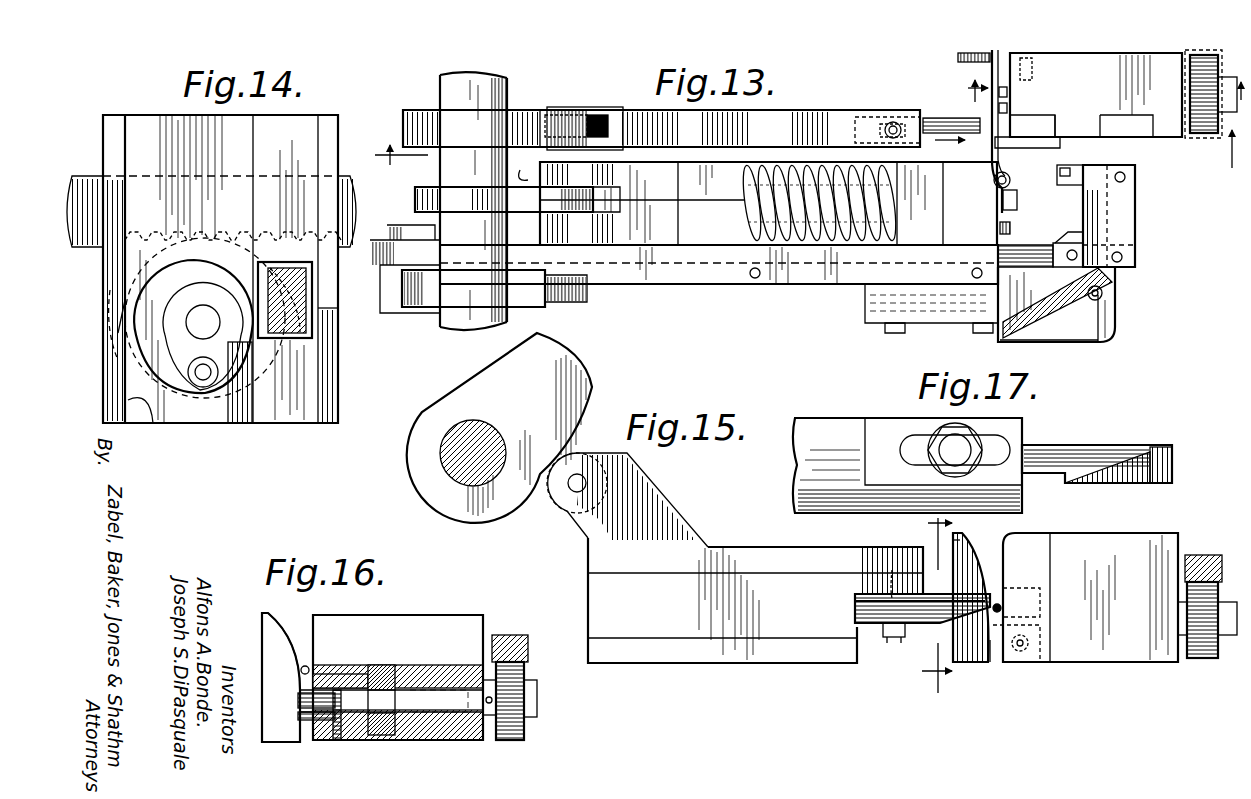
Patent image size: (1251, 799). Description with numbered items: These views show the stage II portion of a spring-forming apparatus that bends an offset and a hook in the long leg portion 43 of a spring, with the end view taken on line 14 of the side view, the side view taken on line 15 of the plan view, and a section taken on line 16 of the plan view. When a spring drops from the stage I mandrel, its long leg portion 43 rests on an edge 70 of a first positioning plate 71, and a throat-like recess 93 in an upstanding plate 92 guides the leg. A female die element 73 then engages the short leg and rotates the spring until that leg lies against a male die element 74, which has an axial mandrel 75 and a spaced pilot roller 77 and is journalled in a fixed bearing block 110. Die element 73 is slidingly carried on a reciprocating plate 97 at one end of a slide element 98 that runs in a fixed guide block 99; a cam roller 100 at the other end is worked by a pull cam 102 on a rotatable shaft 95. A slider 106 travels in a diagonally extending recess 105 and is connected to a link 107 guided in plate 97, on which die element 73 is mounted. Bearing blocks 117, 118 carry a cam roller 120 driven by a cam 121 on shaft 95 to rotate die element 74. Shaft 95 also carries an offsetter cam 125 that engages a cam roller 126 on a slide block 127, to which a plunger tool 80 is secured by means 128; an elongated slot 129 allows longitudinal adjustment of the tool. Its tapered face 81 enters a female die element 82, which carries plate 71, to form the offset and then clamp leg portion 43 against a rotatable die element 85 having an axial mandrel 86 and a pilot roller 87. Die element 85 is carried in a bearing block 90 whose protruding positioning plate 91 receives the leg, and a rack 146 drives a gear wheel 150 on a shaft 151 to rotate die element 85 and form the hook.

In FIG. 15, the line 14— 14 is at (936, 602).
In FIG. 13, the line 15— 15 is at (799, 159).
In FIG. 13, the line 16— 16 is at (1098, 80).
In FIG. 15, the long leg portion 43 is at (1002, 607).
In FIG. 16, the long leg portion 43 is at (304, 664).
In FIG. 14, the edge 70 is at (330, 310).
In FIG. 14, the first positioning plate 71 is at (330, 352).
In FIG. 13, the first positioning plate 71 is at (992, 148).
In FIG. 13, the female die element 73 is at (1066, 186).
In FIG. 13, the male die element 74 is at (1008, 186).
In FIG. 13, the axial mandrel 75 is at (1018, 200).
In FIG. 13, the pilot roller 77 is at (1012, 229).
In FIG. 14, the plunger tool 80 is at (312, 298).
In FIG. 13, the plunger tool 80 is at (962, 118).
In FIG. 15, the plunger tool 80 is at (920, 640).
In FIG. 17, the plunger tool 80 is at (1120, 445).
In FIG. 15, the tapered face 81 is at (971, 645).
In FIG. 17, the tapered face 81 is at (1110, 484).
In FIG. 14, the female die element 82 is at (290, 338).
In FIG. 13, the female die element 82 is at (1040, 118).
In FIG. 15, the female die element 82 is at (1030, 573).
In FIG. 14, the rotatable die element 85 is at (163, 299).
In FIG. 13, the rotatable die element 85 is at (964, 86).
In FIG. 14, the axial mandrel 86 is at (203, 336).
In FIG. 13, the axial mandrel 86 is at (1008, 91).
In FIG. 14, the pilot roller 87 is at (201, 388).
In FIG. 13, the bearing block 90 is at (1110, 88).
In FIG. 16, the bearing block 90 is at (404, 645).
In FIG. 14, the positioning plate 91 is at (262, 397).
In FIG. 13, the positioning plate 91 is at (998, 107).
In FIG. 14, the upstanding plate 92 is at (150, 412).
In FIG. 13, the upstanding plate 92 is at (958, 57).
In FIG. 15, the upstanding plate 92 is at (966, 560).
In FIG. 16, the upstanding plate 92 is at (262, 655).
In FIG. 14, the throat-like recess 93 is at (112, 334).
In FIG. 13, the throat-like recess 93 is at (992, 69).
In FIG. 15, the throat-like recess 93 is at (975, 540).
In FIG. 16, the throat-like recess 93 is at (281, 618).
In FIG. 13, the rotatable shaft 95 is at (440, 88).
In FIG. 15, the rotatable shaft 95 is at (440, 463).
In FIG. 13, the reciprocating plate 97 is at (1135, 207).
In FIG. 13, the slide element 98 is at (736, 268).
In FIG. 13, the fixed guide block 99 is at (795, 286).
In FIG. 13, the cam roller 100 is at (397, 313).
In FIG. 13, the pull cam 102 is at (560, 304).
In FIG. 13, the diagonally extending recess 105 is at (1042, 340).
In FIG. 13, the slider 106 is at (1100, 335).
In FIG. 13, the link 107 is at (1082, 276).
In FIG. 13, the fixed bearing block 110 is at (978, 221).
In FIG. 13, the bearing block 117 is at (655, 186).
In FIG. 13, the bearing block 118 is at (655, 230).
In FIG. 13, the cam roller 120 is at (528, 165).
In FIG. 13, the cam 121 is at (415, 200).
In FIG. 13, the offsetter cam 125 is at (517, 110).
In FIG. 15, the offsetter cam 125 is at (425, 425).
In FIG. 13, the cam roller 126 is at (598, 113).
In FIG. 15, the cam roller 126 is at (560, 498).
In FIG. 13, the slide block 127 is at (722, 110).
In FIG. 15, the slide block 127 is at (727, 546).
In FIG. 17, the slide block 127 is at (828, 417).
In FIG. 13, the securing means 128 is at (893, 122).
In FIG. 15, the securing means 128 is at (890, 642).
In FIG. 17, the securing means 128 is at (945, 428).
In FIG. 15, the elongated slot 129 is at (872, 630).
In FIG. 17, the elongated slot 129 is at (995, 443).
In FIG. 14, the rack 146 is at (90, 178).
In FIG. 13, the rack 146 is at (1200, 138).
In FIG. 15, the rack 146 is at (1203, 555).
In FIG. 16, the rack 146 is at (515, 636).
In FIG. 14, the gear wheel 150 is at (108, 259).
In FIG. 13, the gear wheel 150 is at (1225, 115).
In FIG. 15, the gear wheel 150 is at (1201, 659).
In FIG. 16, the gear wheel 150 is at (506, 740).
In FIG. 16, the shaft 151 is at (537, 697).